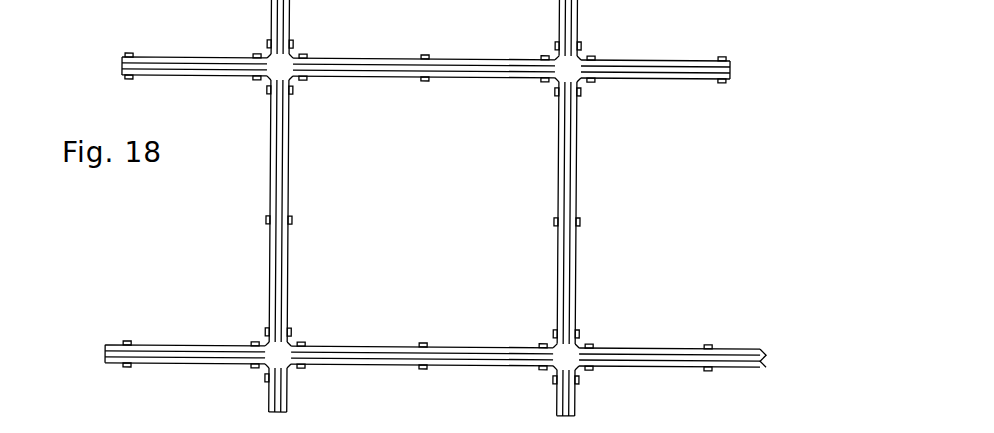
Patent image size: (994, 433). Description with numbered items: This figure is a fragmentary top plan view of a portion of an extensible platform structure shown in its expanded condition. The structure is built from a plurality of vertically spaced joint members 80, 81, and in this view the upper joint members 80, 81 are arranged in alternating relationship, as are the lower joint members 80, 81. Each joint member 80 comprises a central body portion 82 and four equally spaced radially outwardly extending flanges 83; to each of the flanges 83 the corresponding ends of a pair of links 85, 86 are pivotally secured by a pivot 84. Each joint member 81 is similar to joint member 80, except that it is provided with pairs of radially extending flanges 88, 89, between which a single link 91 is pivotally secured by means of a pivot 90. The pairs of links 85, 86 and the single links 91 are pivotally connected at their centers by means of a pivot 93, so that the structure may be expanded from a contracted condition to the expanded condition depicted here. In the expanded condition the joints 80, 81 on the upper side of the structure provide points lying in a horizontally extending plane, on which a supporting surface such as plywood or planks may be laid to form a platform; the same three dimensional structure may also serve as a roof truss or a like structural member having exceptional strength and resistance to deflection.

The joint member 80 is at (592, 48).
The joint member 81 is at (589, 336).
The central body portion 82 is at (284, 349).
The flange 83 is at (248, 358).
The pivot 84 is at (301, 345).
The link 85 is at (180, 365).
The link 86 is at (183, 345).
The flange 88 is at (592, 368).
The flange 89 is at (596, 350).
The pivot 90 is at (555, 376).
The link 91 is at (573, 303).
The pivot 93 is at (425, 345).